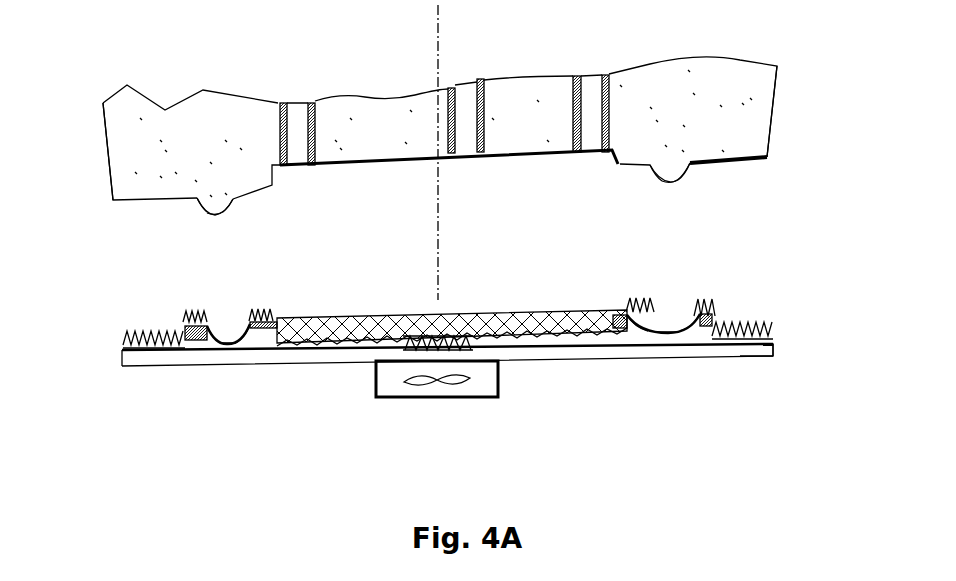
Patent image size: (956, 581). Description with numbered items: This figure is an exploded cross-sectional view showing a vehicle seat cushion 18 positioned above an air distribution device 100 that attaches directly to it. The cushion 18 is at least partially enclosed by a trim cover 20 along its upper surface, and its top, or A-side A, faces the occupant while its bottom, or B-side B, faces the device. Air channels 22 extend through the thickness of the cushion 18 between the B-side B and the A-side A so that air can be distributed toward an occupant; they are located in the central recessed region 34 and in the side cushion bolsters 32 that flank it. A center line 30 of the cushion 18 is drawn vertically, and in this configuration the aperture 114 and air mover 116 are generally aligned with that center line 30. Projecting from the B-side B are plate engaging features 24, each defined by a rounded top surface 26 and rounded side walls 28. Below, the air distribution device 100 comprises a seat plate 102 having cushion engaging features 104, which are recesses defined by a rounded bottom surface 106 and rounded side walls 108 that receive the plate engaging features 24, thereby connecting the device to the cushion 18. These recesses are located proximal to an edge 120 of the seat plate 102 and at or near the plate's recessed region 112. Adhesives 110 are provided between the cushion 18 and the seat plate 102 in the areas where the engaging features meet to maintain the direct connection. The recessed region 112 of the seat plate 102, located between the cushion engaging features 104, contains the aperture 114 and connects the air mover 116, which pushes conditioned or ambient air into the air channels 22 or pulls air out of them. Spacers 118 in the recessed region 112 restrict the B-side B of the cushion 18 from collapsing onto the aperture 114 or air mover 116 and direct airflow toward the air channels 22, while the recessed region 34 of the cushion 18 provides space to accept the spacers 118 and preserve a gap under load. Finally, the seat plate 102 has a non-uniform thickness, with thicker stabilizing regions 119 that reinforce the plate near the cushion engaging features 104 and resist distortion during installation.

The cushion 18 is at (97, 125).
The trim cover 20 is at (207, 88).
The air channels 22 is at (297, 118).
The plate engaging features 24 is at (236, 221).
The top surface 26 is at (212, 218).
The side walls 28 is at (197, 203).
The center line 30 is at (437, 31).
The side cushion bolsters 32 is at (760, 100).
The recessed region 34 is at (396, 173).
The A-side A is at (720, 55).
The B-side B is at (727, 170).
The air distribution device 100 is at (442, 354).
The seat plate 102 is at (588, 358).
The cushion engaging features 104 is at (225, 358).
The bottom surface 106 is at (232, 350).
The side walls 108 is at (205, 340).
The adhesives 110 is at (257, 312).
The recessed region 112 is at (452, 313).
The aperture 114 is at (410, 340).
The air mover 116 is at (471, 401).
The spacers 118 is at (370, 330).
The stabilizing regions 119 is at (625, 322).
The edge 120 is at (765, 352).